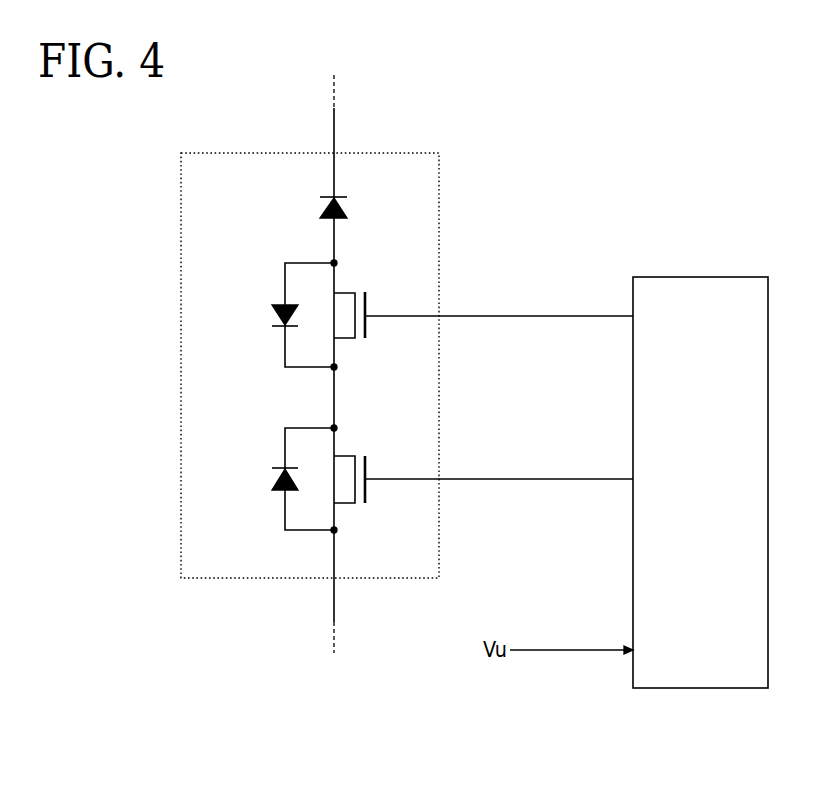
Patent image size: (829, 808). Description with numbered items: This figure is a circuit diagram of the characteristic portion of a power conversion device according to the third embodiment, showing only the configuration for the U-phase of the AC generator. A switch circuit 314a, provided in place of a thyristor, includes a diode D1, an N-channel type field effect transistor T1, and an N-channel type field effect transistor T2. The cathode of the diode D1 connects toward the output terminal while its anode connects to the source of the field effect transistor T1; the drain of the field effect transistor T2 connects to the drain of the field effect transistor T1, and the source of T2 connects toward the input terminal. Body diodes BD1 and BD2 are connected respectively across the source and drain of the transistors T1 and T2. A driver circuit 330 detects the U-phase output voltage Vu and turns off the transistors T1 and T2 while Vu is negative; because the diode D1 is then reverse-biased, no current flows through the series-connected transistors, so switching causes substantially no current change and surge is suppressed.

The switch circuit 314a is at (441, 184).
The diode D1 is at (322, 210).
The body diode BD1 is at (273, 313).
The body diode BD2 is at (275, 482).
The N-channel type field effect transistor T1 is at (367, 300).
The N-channel type field effect transistor T2 is at (367, 465).
The driver circuit 330 is at (700, 277).